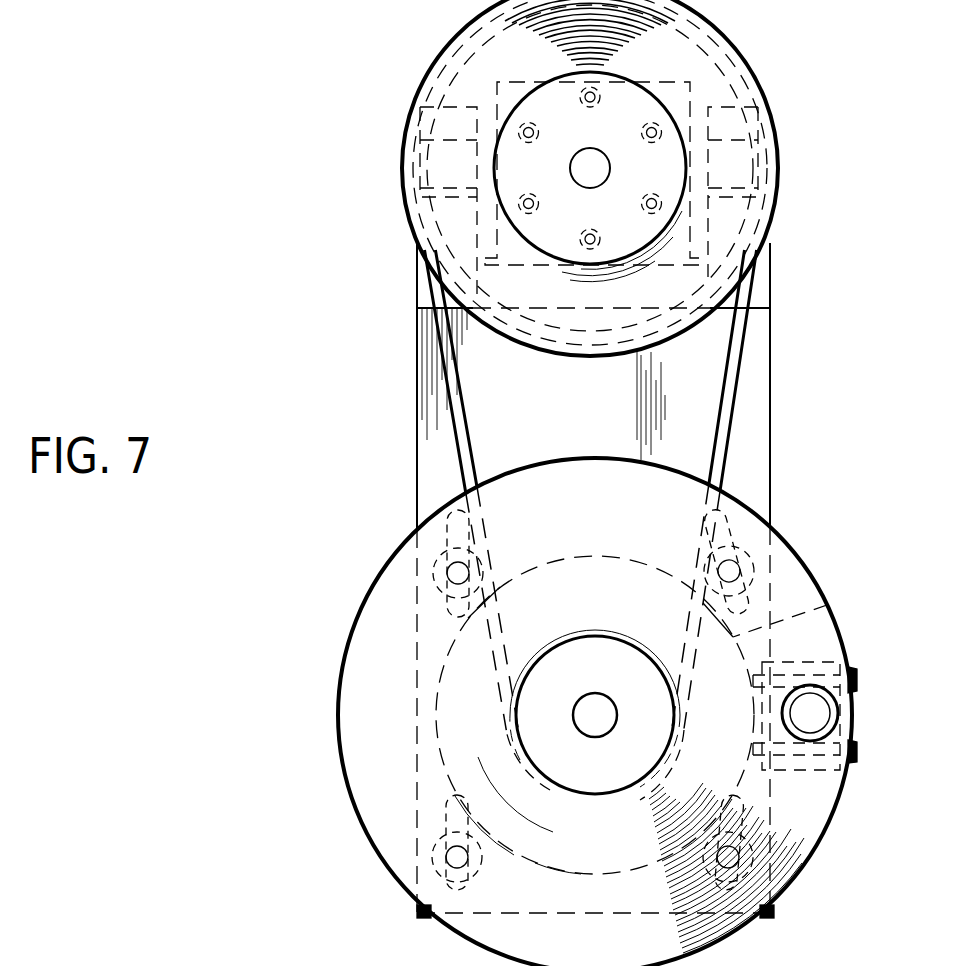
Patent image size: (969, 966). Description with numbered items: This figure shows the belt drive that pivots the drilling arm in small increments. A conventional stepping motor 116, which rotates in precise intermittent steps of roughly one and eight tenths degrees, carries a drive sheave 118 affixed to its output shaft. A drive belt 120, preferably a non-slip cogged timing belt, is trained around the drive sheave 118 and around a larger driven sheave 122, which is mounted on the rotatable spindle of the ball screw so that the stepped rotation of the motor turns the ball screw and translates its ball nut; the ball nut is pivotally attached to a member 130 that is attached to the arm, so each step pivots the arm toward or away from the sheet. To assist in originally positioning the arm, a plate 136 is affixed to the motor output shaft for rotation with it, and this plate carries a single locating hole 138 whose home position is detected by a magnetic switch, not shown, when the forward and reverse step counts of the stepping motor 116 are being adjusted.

The stepping motor 116 is at (840, 600).
The drive sheave 118 is at (557, 638).
The drive belt 120 is at (744, 374).
The driven sheave 122 is at (400, 168).
The member 130 is at (612, 604).
The plate 136 is at (846, 656).
The locating hole 138 is at (833, 715).